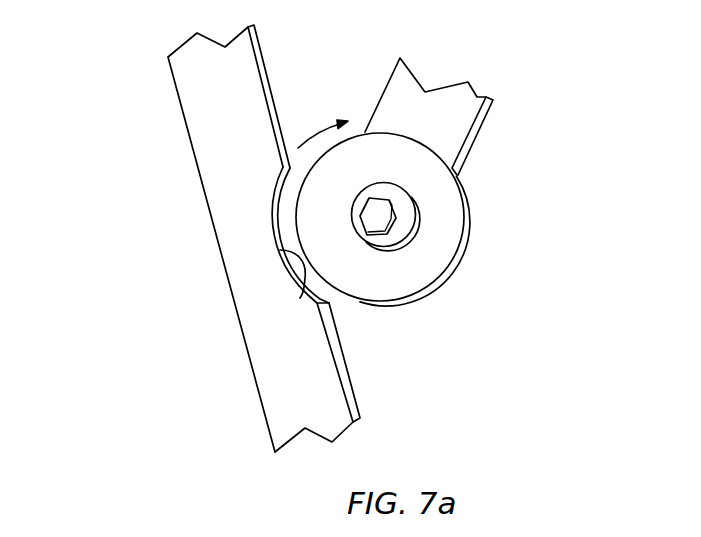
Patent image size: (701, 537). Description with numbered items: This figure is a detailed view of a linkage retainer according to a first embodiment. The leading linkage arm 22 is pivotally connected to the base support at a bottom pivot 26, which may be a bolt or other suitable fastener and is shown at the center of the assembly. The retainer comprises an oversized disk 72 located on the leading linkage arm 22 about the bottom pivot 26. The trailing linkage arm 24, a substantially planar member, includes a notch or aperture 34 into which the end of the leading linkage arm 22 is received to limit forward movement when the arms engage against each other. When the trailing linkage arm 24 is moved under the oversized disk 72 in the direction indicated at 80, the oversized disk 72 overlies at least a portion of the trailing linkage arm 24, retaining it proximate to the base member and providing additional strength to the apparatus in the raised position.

The leading linkage arm 22 is at (453, 122).
The trailing linkage arm 24 is at (237, 138).
The bottom pivot 26 is at (390, 213).
The notch or aperture 34 is at (301, 298).
The oversized disk 72 is at (403, 278).
The direction of trailing linkage arm movement 80 is at (316, 134).